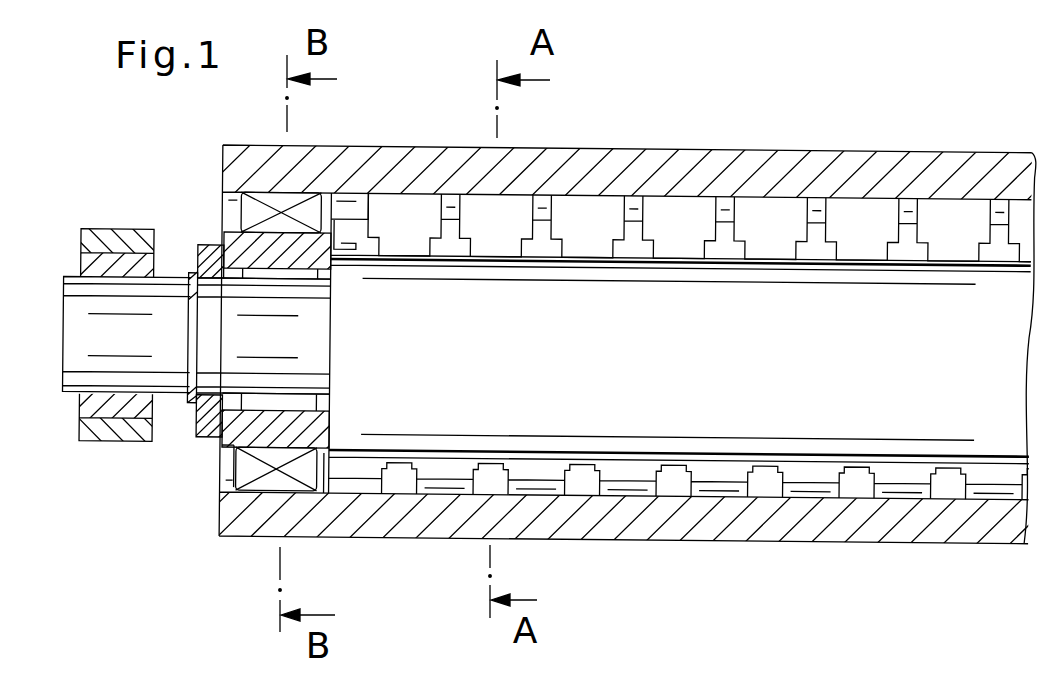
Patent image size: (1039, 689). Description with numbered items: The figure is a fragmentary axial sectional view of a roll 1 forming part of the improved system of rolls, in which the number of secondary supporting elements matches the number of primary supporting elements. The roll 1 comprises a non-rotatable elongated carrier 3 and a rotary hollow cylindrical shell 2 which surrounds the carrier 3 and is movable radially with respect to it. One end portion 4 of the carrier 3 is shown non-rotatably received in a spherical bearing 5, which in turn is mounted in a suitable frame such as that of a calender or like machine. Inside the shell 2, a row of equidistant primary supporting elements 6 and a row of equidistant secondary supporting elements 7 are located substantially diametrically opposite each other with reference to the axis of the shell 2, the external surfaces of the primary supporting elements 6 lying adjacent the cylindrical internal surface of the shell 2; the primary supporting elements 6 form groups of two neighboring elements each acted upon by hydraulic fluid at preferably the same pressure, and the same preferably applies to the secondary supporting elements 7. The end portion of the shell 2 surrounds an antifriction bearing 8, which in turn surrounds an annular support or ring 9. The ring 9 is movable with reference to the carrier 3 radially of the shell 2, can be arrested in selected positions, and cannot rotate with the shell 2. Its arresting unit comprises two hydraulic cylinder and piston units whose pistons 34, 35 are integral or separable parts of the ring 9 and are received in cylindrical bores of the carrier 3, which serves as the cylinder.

The roll 1 is at (983, 153).
The shell 2 is at (938, 177).
The carrier 3 is at (907, 452).
The end portion 4 is at (66, 378).
The spherical bearing 5 is at (123, 443).
The primary supporting element 6 is at (683, 208).
The secondary supporting element 7 is at (673, 492).
The antifriction bearing 8 is at (252, 200).
The annular support 9 is at (255, 275).
The piston 34 is at (220, 253).
The piston 35 is at (237, 452).